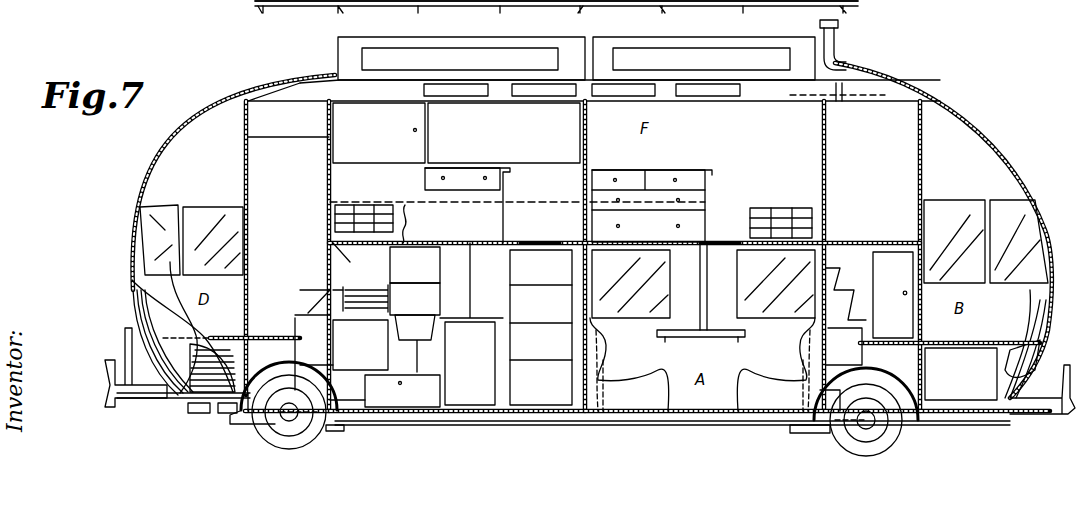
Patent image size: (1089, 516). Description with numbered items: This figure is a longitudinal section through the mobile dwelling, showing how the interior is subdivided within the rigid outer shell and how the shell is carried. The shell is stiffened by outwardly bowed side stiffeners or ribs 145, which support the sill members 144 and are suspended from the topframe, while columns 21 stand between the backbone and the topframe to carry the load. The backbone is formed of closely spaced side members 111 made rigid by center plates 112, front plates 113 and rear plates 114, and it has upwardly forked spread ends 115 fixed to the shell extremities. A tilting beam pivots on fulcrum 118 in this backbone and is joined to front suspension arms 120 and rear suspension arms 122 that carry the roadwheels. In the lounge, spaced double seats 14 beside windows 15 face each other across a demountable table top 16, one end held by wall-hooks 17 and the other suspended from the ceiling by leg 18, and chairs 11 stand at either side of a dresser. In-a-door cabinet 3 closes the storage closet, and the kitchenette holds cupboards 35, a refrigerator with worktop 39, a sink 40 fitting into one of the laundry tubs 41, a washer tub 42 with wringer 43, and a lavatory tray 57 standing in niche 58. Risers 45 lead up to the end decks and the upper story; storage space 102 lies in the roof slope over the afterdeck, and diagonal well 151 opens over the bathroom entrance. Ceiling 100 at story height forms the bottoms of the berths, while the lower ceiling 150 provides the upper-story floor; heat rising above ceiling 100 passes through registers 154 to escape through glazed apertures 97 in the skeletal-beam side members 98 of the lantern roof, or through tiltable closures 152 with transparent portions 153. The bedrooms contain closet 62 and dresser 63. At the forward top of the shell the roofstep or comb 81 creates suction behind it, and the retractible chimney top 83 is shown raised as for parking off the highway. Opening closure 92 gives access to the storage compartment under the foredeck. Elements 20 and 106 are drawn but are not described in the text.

The side stiffeners or ribs 145 is at (352, 2).
The sill members 144 is at (482, 3).
The closures 152 is at (338, 52).
The transparent portions 153 is at (528, 52).
The retractible chimney top 83 is at (838, 26).
The comb or undercut roofstep 81 is at (852, 68).
The chairs 11 is at (839, 92).
The storage space 102 is at (288, 124).
The diagonal well 151 is at (340, 156).
The skeletal-beam side members 98 is at (508, 100).
The glazed apertures 97 is at (706, 97).
The columns 21 is at (249, 192).
The closet 62 is at (863, 180).
The dresser 63 is at (506, 170).
The registers 154 is at (388, 190).
The ceiling 100 is at (496, 205).
The ceiling 150 is at (552, 241).
The windows 15 is at (594, 259).
The wringer 43 is at (360, 286).
The niche 58 is at (415, 265).
The cupboards 35 is at (471, 280).
The in-a-door cabinet 3 is at (541, 327).
The leg 18 is at (698, 284).
The steps 20 is at (838, 304).
The risers 45 is at (312, 292).
The lavatory tray 57 is at (415, 299).
The sink 40 is at (415, 343).
The tub 42 is at (360, 345).
The refrigerator with worktop 39 is at (470, 363).
The laundry tubs 41 is at (432, 380).
The double seats 14 is at (638, 372).
The wall-hooks 17 is at (667, 340).
The table top 16 is at (703, 338).
The opening closure 92 is at (961, 374).
The hitch 106 is at (195, 414).
The rear suspension arms 122 is at (333, 426).
The front plates 113 is at (385, 426).
The fulcrum 118 is at (480, 425).
The center plates 112 is at (596, 426).
The side members 111 is at (694, 425).
The rear plates 114 is at (790, 431).
The front suspension arms 120 is at (826, 432).
The spread ends 115 is at (1030, 418).